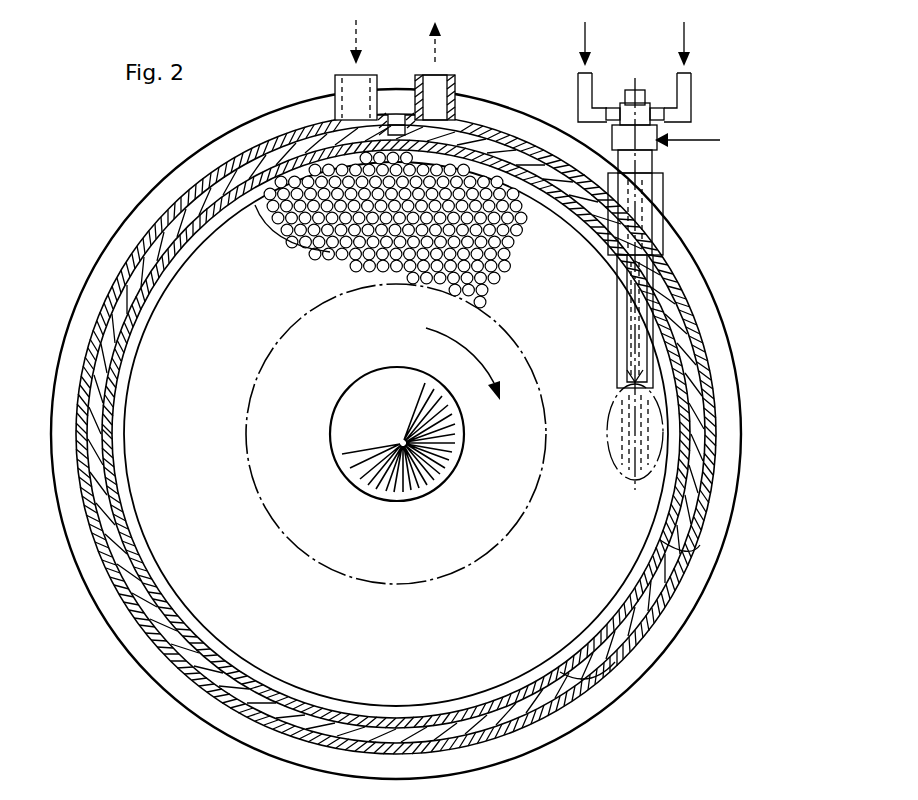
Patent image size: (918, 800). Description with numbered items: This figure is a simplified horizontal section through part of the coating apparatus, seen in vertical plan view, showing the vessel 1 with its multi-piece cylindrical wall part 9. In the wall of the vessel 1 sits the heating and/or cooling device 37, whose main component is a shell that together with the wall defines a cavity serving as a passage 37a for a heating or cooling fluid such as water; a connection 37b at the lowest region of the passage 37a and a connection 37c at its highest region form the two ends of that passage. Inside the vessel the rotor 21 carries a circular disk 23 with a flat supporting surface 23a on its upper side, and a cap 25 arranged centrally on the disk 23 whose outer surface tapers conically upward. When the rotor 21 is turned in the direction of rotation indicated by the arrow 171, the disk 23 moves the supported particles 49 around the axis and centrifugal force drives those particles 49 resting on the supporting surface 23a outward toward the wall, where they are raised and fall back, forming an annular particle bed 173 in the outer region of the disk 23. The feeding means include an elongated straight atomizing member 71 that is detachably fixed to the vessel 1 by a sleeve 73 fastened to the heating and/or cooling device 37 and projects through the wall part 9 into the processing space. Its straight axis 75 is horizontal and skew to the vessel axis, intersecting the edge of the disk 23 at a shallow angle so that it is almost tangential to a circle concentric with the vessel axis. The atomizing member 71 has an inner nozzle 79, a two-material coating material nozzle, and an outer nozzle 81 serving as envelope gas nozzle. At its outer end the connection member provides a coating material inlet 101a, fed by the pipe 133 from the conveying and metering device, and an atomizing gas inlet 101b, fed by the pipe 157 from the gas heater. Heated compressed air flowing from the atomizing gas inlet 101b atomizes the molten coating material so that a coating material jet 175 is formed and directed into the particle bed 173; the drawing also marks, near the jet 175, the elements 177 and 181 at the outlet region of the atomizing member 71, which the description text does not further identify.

The vessel 1 is at (167, 217).
The cylindrical wall part 9 is at (165, 253).
The rotor 21 is at (346, 452).
The circular disk 23 is at (190, 610).
The supporting surface 23a is at (243, 625).
The cap 25 is at (281, 567).
The heating and/or cooling device 37 is at (637, 648).
The passage 37a is at (597, 673).
The connection 37b is at (335, 82).
The connection 37c is at (455, 82).
The particles 49 is at (300, 165).
The atomizing member 71 is at (655, 157).
The sleeve 73 is at (665, 190).
The axis 75 is at (650, 338).
The inner nozzle 79 is at (657, 380).
The outer nozzle 81 is at (657, 412).
The coating material inlet 101a is at (604, 122).
The atomizing gas inlet 101b is at (674, 122).
The pipe 133 is at (579, 78).
The pipe 157 is at (691, 80).
The arrow 171 is at (690, 552).
The annular particle bed 173 is at (200, 185).
The coating material jet 175 is at (648, 445).
The sensor element 177 is at (657, 423).
The sensing zone 181 is at (643, 473).